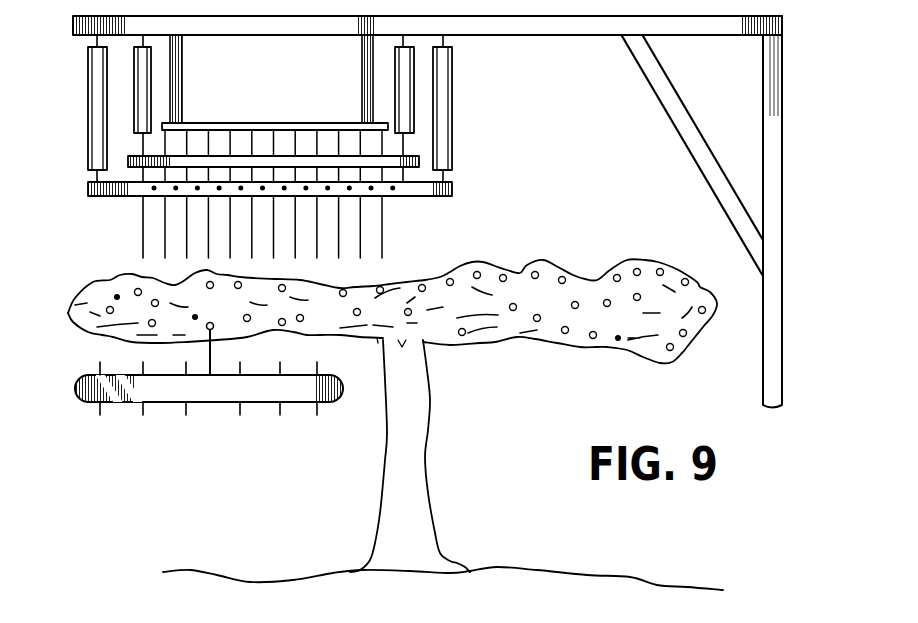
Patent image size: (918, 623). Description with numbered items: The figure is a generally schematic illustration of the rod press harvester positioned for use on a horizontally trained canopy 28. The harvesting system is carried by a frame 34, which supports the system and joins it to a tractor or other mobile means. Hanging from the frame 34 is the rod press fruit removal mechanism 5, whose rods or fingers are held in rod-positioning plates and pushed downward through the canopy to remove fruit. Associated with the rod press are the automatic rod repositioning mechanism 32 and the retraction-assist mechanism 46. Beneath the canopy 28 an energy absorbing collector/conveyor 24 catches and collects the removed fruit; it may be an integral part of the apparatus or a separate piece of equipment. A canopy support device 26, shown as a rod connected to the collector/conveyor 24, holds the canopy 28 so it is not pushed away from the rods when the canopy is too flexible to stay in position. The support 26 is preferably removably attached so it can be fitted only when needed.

The frame 34 is at (495, 32).
The automatic rod repositioning mechanism 32 is at (322, 123).
The rod press fruit removal mechanism 5 is at (402, 167).
The retraction-assist mechanism 46 is at (125, 198).
The horizontally trained canopy 28 is at (515, 278).
The canopy support device 26 is at (212, 353).
The collector/conveyor 24 is at (332, 403).